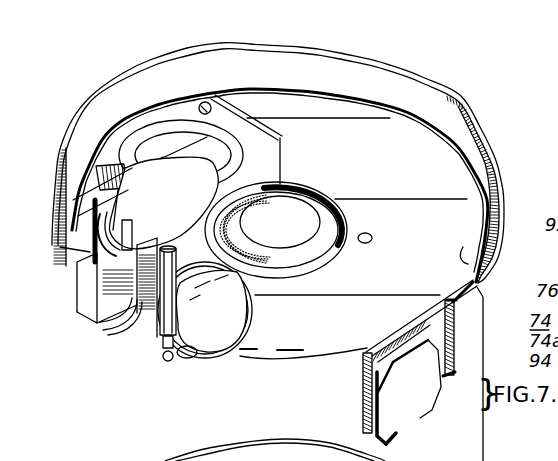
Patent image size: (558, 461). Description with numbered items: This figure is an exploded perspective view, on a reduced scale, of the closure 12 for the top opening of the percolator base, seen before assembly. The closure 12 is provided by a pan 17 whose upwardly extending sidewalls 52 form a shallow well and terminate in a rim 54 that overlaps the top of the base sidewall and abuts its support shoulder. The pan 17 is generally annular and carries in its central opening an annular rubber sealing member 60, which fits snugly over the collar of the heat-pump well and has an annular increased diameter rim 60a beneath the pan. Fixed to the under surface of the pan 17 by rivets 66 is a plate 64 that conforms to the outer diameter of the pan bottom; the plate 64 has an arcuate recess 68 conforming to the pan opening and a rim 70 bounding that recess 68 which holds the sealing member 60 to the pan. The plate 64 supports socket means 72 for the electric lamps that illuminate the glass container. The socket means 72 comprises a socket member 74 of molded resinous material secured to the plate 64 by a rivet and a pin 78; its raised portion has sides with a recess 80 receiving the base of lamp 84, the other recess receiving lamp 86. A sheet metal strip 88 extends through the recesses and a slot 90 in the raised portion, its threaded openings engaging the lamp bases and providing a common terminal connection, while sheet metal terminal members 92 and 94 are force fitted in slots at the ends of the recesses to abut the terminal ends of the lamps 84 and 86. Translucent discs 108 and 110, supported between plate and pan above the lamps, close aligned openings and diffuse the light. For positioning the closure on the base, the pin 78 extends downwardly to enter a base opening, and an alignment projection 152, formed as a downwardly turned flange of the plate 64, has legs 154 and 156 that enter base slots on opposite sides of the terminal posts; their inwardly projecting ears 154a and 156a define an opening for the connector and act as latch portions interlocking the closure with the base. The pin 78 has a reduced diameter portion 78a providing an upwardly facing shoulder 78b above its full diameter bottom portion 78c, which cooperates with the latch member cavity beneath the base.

The closure 12 is at (458, 98).
The pan 17 is at (506, 283).
The sidewalls 52 is at (368, 78).
The rim 54 is at (197, 57).
The sealing member 60 is at (317, 197).
The increased diameter rim 60a is at (337, 210).
The plate 64 is at (327, 340).
The rivets 66 is at (211, 100).
The arcuate recess 68 is at (293, 262).
The rim 70 is at (313, 260).
The socket means 72 is at (82, 317).
The socket member 74 is at (83, 230).
The pin 78 is at (160, 330).
The reduced diameter portion 78a is at (166, 345).
The upwardly facing shoulder 78b is at (183, 357).
The full diameter bottom portion 78c is at (170, 362).
The recess 80 is at (110, 200).
The lamp 84 is at (176, 209).
The lamp 86 is at (211, 337).
The sheet metal strip 88 is at (117, 340).
The slot 90 is at (92, 217).
The terminal member 92 is at (100, 272).
The terminal member 94 is at (100, 330).
The disc 108 is at (167, 147).
The disc 110 is at (240, 320).
The alignment projection 152 is at (400, 330).
The leg 154 is at (373, 412).
The ear 154a is at (396, 431).
The leg 156 is at (446, 384).
The ear 156a is at (433, 403).